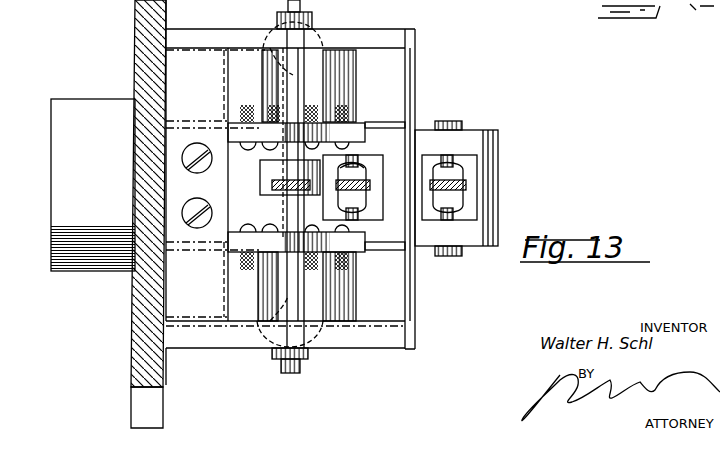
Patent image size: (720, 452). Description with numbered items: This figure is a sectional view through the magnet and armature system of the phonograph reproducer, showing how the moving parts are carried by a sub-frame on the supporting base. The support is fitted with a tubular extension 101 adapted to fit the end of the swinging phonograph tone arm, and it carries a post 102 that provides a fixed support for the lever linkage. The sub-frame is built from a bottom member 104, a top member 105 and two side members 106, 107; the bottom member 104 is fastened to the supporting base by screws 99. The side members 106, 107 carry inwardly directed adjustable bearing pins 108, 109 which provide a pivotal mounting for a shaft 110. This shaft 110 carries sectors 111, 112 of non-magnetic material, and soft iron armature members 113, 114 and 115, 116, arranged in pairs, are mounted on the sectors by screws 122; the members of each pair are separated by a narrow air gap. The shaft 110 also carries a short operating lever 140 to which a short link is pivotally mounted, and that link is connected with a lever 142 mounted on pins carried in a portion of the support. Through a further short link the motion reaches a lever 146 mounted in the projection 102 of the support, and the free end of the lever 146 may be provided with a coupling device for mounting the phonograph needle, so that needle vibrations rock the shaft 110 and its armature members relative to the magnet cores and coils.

The screws 99 is at (200, 203).
The tubular extension 101 is at (93, 185).
The post 102 is at (494, 150).
The bottom member 104 is at (212, 303).
The top member 105 is at (411, 294).
The side member 106 is at (374, 25).
The side member 107 is at (373, 344).
The adjustable bearing pin 108 is at (293, 174).
The adjustable bearing pin 109 is at (300, 369).
The shaft 110 is at (288, 296).
The sector 111 is at (234, 143).
The sector 112 is at (296, 233).
The armature member 113 is at (255, 86).
The armature member 114 is at (345, 83).
The armature member 115 is at (348, 317).
The armature member 116 is at (254, 286).
The screws 122 is at (348, 143).
The operating lever 140 is at (272, 180).
The lever 142 is at (368, 190).
The lever 146 is at (466, 190).